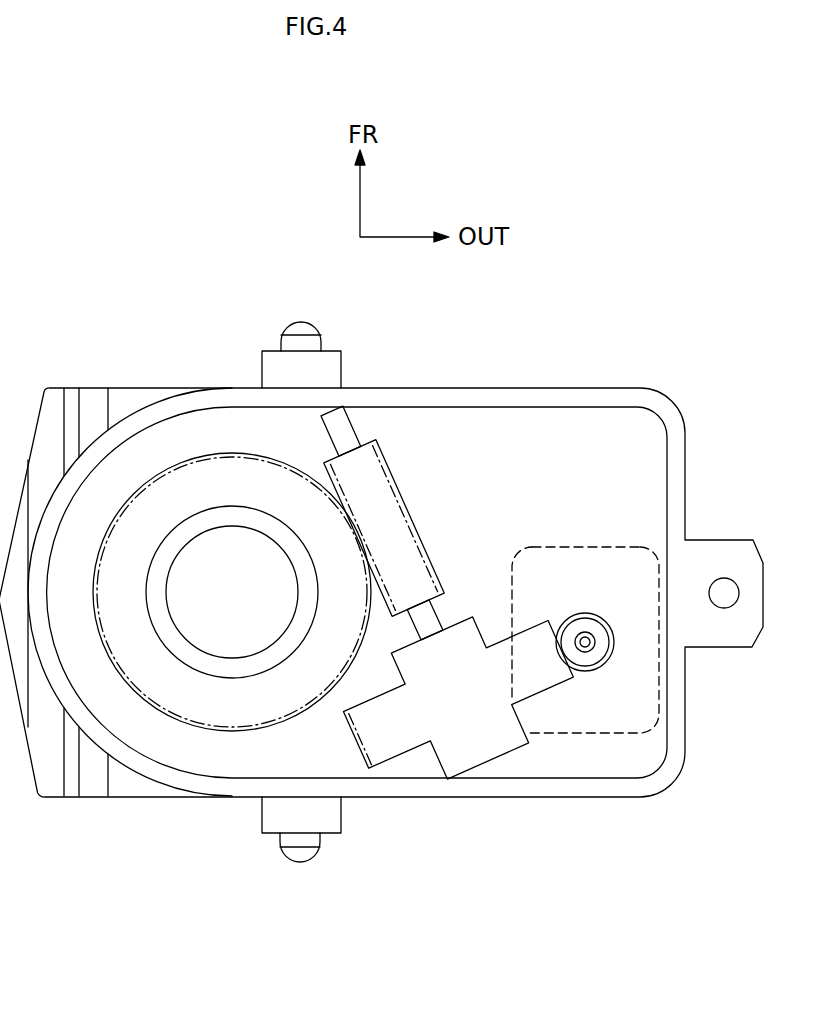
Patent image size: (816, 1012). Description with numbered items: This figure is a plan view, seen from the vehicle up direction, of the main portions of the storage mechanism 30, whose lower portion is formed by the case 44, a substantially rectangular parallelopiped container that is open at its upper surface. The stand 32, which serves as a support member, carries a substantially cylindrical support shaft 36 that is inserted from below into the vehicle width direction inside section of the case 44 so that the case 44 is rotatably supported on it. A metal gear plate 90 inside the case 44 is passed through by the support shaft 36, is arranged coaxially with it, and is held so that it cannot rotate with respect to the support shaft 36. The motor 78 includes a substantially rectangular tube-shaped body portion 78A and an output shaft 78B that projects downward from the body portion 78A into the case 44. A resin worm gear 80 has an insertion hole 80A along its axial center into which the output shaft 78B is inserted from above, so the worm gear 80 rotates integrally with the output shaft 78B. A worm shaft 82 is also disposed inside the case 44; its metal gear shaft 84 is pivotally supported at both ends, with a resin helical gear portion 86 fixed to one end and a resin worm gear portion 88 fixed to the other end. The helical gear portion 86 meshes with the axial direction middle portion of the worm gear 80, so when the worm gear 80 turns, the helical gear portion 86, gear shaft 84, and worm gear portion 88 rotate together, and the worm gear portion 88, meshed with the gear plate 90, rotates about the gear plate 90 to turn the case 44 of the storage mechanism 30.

The storage mechanism 30 is at (108, 349).
The case 44 is at (522, 387).
The gear plate 90 is at (93, 568).
The support shaft 36 is at (220, 521).
The stand 32 is at (232, 592).
The worm shaft 82 is at (432, 545).
The worm gear portion 88 is at (400, 486).
The gear shaft 84 is at (443, 617).
The helical gear portion 86 is at (347, 727).
The motor 78 is at (560, 540).
The body portion 78A is at (620, 547).
The worm gear 80 is at (608, 664).
The insertion hole 80A is at (585, 632).
The output shaft 78B is at (597, 642).